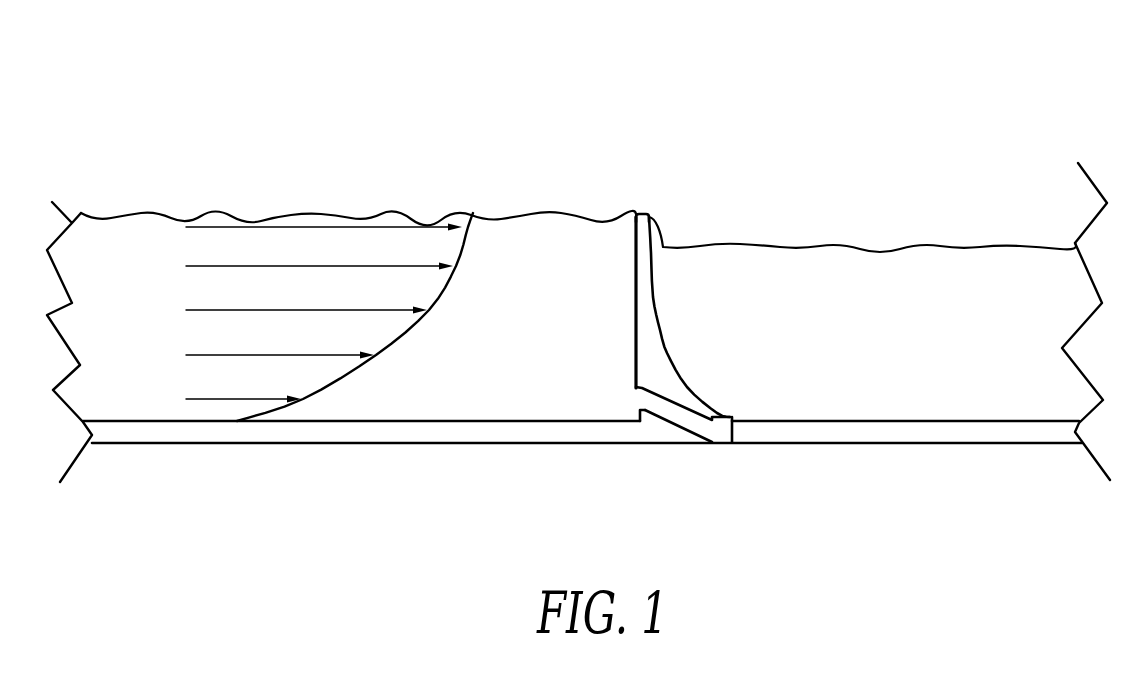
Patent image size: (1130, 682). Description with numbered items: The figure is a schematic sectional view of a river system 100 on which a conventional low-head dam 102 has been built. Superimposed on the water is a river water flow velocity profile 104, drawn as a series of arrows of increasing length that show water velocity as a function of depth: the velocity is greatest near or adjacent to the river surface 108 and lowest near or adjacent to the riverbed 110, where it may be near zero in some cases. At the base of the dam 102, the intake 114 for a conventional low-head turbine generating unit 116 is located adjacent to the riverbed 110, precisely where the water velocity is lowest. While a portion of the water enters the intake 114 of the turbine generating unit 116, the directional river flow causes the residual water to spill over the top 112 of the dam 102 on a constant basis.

The river system 100 is at (460, 118).
The low-head dam 102 is at (643, 300).
The river water flow velocity profile 104 is at (453, 314).
The river surface 108 is at (165, 213).
The riverbed 110 is at (417, 421).
The top of the dam 112 is at (642, 208).
The intake 114 is at (640, 405).
The low-head turbine generating unit 116 is at (720, 443).